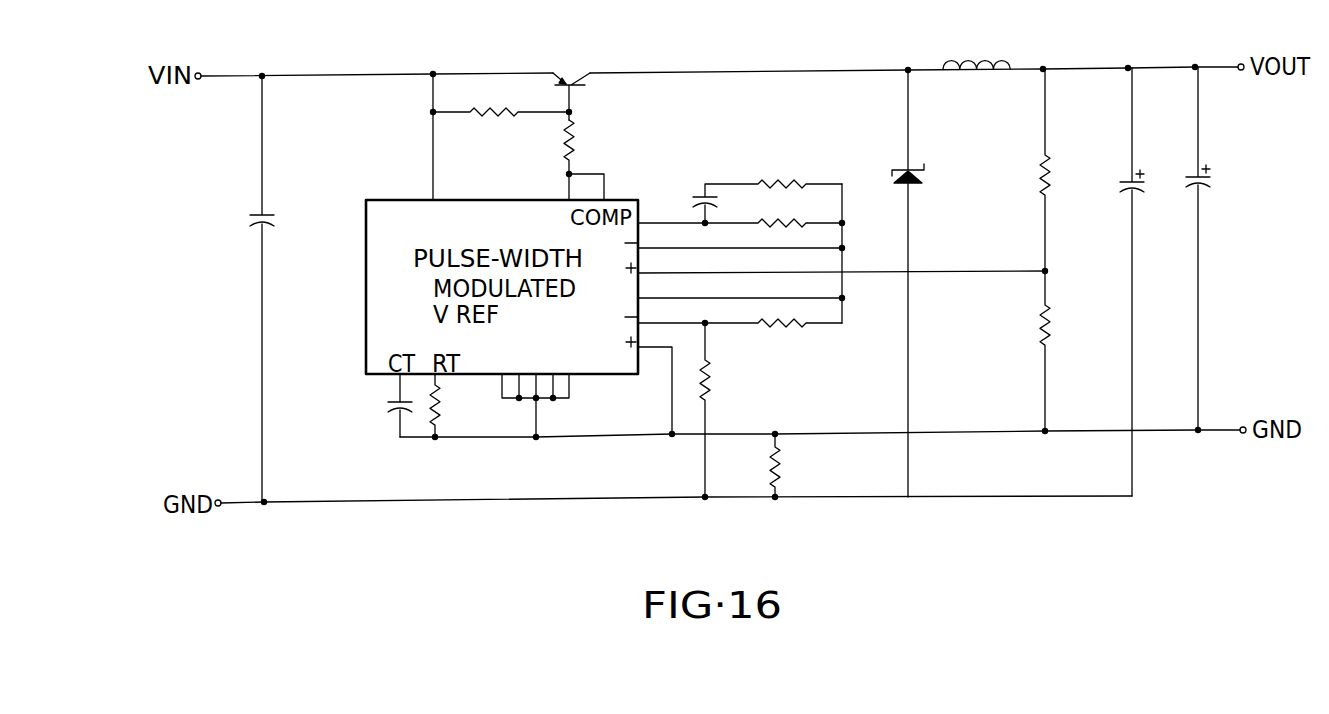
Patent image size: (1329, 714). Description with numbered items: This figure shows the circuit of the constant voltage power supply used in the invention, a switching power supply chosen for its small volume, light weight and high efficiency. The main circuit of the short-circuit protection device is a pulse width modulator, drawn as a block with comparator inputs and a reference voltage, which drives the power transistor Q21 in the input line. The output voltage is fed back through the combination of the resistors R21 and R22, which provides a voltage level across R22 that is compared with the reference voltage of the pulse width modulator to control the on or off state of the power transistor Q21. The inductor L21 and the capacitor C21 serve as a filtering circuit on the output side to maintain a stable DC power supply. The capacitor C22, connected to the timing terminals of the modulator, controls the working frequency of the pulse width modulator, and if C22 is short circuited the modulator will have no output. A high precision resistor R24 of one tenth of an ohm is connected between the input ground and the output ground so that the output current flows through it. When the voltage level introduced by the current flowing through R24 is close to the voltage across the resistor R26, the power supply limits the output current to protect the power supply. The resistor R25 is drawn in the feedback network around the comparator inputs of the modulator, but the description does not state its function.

The power transistor Q21 is at (575, 82).
The inductor L21 is at (976, 52).
The resistor R21 is at (1069, 170).
The resistor R22 is at (1067, 351).
The capacitor C21 is at (1221, 248).
The capacitor C22 is at (373, 405).
The high precision resistor R24 is at (625, 435).
The resistor R25 is at (740, 338).
The resistor R26 is at (729, 410).